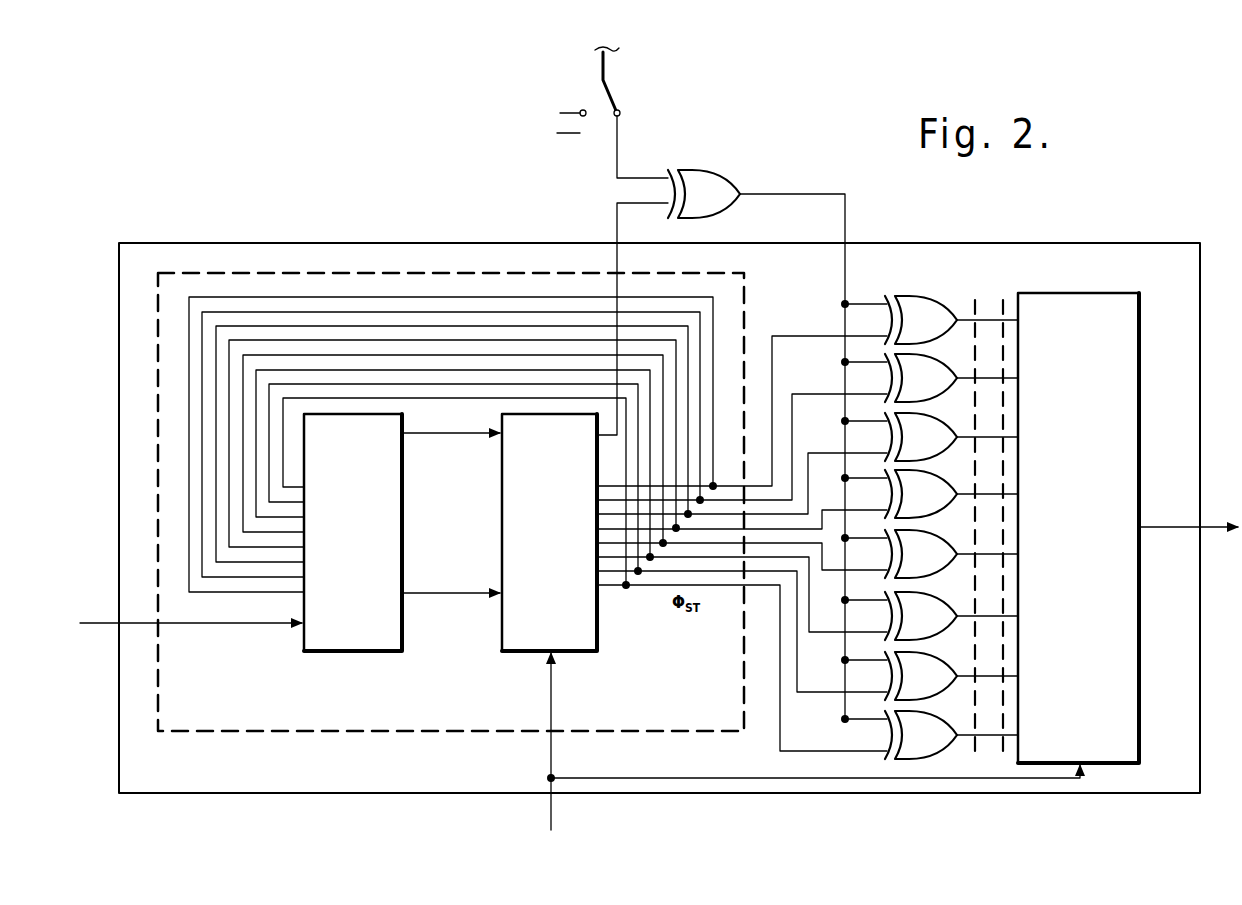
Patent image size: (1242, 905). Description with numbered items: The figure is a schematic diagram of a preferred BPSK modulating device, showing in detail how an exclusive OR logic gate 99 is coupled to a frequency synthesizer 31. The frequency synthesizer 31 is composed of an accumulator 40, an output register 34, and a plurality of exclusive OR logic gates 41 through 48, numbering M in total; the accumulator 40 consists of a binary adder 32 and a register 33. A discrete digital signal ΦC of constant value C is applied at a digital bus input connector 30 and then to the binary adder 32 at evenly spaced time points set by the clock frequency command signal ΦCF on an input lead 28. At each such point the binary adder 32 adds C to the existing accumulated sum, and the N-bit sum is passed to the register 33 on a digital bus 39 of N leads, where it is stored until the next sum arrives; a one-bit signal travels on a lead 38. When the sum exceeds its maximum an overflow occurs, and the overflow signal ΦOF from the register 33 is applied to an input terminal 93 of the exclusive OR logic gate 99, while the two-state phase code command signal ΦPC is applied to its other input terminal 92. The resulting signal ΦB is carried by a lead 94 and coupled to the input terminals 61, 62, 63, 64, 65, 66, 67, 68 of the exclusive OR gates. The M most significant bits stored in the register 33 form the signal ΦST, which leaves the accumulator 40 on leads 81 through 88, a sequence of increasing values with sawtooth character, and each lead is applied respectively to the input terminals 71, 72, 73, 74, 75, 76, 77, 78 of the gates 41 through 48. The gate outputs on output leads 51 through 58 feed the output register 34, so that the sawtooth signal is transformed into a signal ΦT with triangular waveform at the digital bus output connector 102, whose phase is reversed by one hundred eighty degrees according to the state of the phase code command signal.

The input lead 28 is at (551, 820).
The digital bus input connector 30 is at (100, 623).
The frequency synthesizer 31 is at (406, 243).
The binary adder 32 is at (392, 651).
The register 33 is at (597, 651).
The output register 34 is at (1139, 735).
The lead 38 is at (445, 433).
The digital bus 39 is at (424, 593).
The accumulator 40 is at (706, 731).
The exclusive OR logic gate 41 is at (975, 312).
The exclusive OR logic gate 48 is at (975, 745).
The output lead 51 is at (1003, 312).
The output lead 58 is at (1003, 745).
The input terminal 61 is at (858, 304).
The input terminal 62 is at (858, 362).
The input terminal 63 is at (858, 421).
The input terminal 64 is at (858, 478).
The input terminal 65 is at (858, 538).
The input terminal 66 is at (858, 600).
The input terminal 67 is at (858, 660).
The input terminal 68 is at (858, 719).
The input terminal 71 is at (858, 336).
The input terminal 72 is at (858, 394).
The input terminal 73 is at (858, 453).
The input terminal 74 is at (858, 510).
The input terminal 75 is at (858, 570).
The input terminal 76 is at (858, 632).
The input terminal 77 is at (858, 692).
The input terminal 78 is at (858, 751).
The lead 81 is at (690, 462).
The lead 88 is at (690, 462).
The input terminal 92 is at (630, 178).
The input terminal 93 is at (656, 210).
The lead 94 is at (766, 194).
The exclusive OR logic gate 99 is at (706, 170).
The digital bus output connector 102 is at (1215, 527).